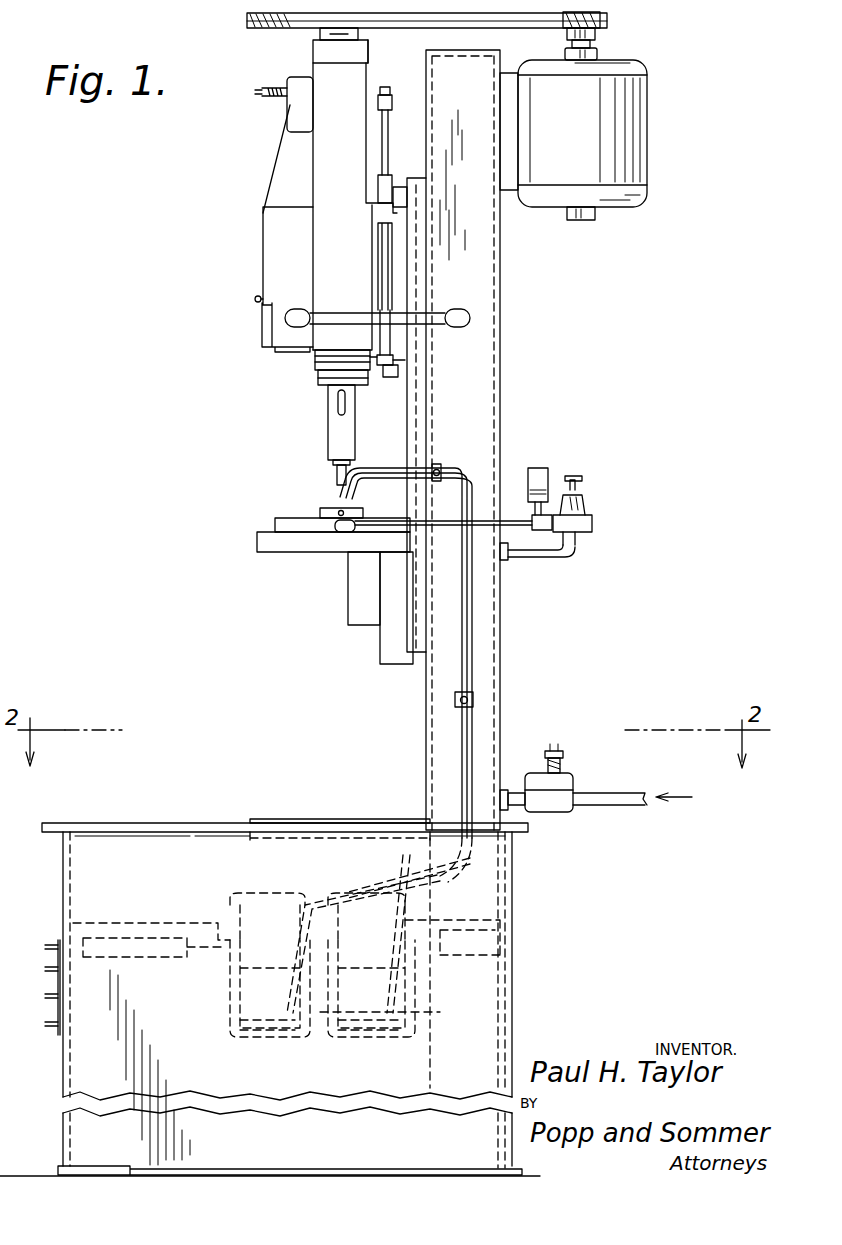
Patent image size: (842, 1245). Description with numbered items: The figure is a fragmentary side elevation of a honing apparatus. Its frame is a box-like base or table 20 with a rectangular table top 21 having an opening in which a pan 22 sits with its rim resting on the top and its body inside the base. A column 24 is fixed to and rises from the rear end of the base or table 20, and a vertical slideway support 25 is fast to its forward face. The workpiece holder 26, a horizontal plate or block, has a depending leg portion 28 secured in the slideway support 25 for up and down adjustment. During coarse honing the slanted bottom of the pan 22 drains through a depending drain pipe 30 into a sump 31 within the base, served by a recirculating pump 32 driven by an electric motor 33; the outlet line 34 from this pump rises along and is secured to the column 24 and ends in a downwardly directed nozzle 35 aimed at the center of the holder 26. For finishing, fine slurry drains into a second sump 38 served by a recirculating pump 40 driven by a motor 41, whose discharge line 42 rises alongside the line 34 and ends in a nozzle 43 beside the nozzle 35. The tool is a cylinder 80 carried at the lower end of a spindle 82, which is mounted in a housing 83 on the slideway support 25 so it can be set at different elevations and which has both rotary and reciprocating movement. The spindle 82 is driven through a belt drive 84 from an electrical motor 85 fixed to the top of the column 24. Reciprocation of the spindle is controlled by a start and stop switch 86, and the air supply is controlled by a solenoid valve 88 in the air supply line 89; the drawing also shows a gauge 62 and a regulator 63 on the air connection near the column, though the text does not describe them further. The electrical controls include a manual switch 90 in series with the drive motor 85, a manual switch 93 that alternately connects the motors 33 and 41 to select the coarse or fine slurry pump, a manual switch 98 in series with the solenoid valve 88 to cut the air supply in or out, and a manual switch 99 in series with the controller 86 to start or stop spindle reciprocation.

The base or table 20 is at (53, 902).
The table top 21 is at (128, 823).
The pan 22 is at (302, 822).
The column 24 is at (490, 350).
The slideway support 25 is at (419, 432).
The workpiece holder 26 is at (257, 545).
The depending leg portion 28 is at (395, 660).
The drain pipe 30 is at (405, 862).
The sump 31 is at (340, 1040).
The recirculating pump 32 is at (372, 1040).
The electric motor 33 is at (345, 893).
The outlet line 34 is at (472, 637).
The nozzle 35 is at (340, 493).
The sump 38 is at (228, 1033).
The recirculating pump 40 is at (255, 1040).
The motor 41 is at (236, 896).
The discharge line 42 is at (458, 724).
The nozzle 43 is at (372, 490).
The pressure gauge 62 is at (545, 468).
The pressure regulator 63 is at (585, 505).
The cylinder 80 is at (337, 477).
The spindle 82 is at (322, 407).
The housing 83 is at (263, 216).
The belt drive 84 is at (517, 29).
The electrical motor 85 is at (645, 113).
The start and stop switch 86 is at (290, 105).
The solenoid valve 88 is at (556, 805).
The air supply line 89 is at (628, 792).
The manual switch 90 is at (52, 1031).
The manual switch 93 is at (49, 1000).
The manual switch 98 is at (49, 972).
The manual switch 99 is at (49, 950).